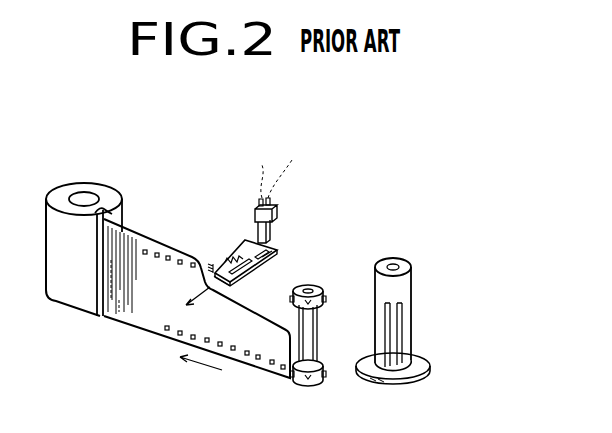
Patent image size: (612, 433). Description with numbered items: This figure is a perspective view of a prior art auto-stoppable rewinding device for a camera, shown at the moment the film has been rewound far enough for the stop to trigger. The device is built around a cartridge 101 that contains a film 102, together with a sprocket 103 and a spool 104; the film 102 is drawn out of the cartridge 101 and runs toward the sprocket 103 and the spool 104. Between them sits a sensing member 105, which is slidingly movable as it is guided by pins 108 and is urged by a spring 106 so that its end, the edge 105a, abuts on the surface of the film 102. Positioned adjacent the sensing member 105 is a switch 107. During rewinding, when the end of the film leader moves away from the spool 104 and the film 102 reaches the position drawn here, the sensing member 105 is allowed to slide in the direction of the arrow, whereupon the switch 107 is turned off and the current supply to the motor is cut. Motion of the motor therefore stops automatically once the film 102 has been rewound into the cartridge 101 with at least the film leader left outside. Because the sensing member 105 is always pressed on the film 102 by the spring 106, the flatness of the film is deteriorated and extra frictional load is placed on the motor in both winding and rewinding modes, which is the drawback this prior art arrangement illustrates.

The cartridge 101 is at (103, 191).
The film 102 is at (143, 318).
The sprocket 103 is at (323, 289).
The spool 104 is at (410, 309).
The sensing member 105 is at (277, 250).
The pressure plate edge 105a is at (218, 283).
The spring 106 is at (230, 253).
The switch 107 is at (257, 210).
The pins 108 is at (268, 255).